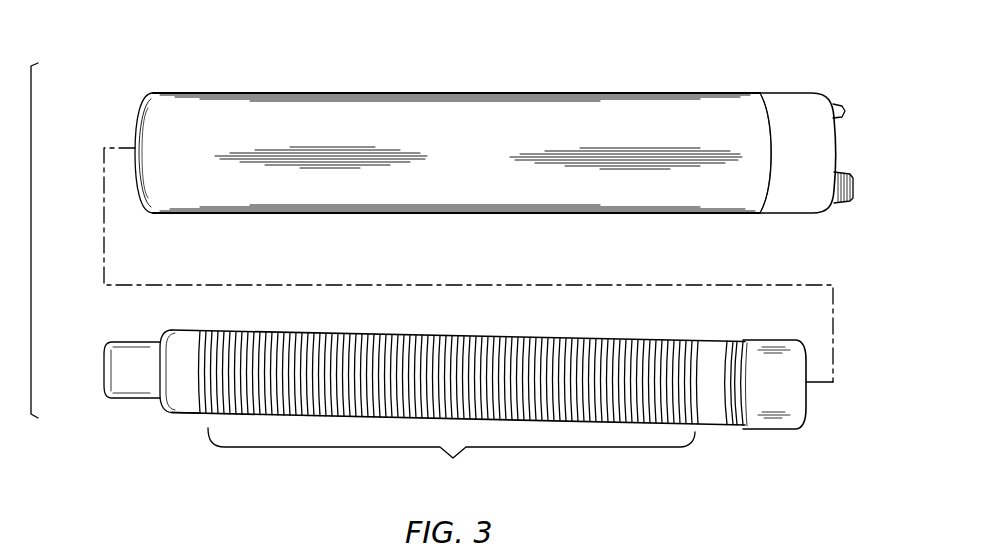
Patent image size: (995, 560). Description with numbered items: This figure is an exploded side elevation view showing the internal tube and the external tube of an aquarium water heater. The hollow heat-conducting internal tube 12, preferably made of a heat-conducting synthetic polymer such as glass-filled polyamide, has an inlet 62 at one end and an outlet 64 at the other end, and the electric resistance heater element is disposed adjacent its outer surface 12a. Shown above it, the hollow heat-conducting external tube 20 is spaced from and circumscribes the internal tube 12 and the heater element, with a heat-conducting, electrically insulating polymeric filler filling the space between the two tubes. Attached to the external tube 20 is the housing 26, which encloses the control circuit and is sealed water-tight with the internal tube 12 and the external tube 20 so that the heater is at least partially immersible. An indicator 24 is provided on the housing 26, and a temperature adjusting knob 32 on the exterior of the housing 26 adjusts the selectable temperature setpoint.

The hollow heat-conducting external tube 20 is at (725, 110).
The housing 26 is at (803, 213).
The indicator 24 is at (846, 111).
The temperature adjusting knob 32 is at (855, 188).
The hollow heat-conducting internal tube 12 is at (177, 398).
The outer surface 12a is at (180, 410).
The inlet 62 is at (103, 363).
The outlet 64 is at (806, 413).